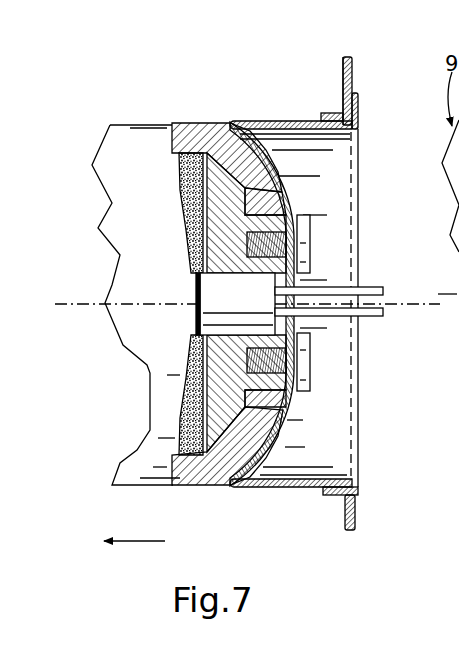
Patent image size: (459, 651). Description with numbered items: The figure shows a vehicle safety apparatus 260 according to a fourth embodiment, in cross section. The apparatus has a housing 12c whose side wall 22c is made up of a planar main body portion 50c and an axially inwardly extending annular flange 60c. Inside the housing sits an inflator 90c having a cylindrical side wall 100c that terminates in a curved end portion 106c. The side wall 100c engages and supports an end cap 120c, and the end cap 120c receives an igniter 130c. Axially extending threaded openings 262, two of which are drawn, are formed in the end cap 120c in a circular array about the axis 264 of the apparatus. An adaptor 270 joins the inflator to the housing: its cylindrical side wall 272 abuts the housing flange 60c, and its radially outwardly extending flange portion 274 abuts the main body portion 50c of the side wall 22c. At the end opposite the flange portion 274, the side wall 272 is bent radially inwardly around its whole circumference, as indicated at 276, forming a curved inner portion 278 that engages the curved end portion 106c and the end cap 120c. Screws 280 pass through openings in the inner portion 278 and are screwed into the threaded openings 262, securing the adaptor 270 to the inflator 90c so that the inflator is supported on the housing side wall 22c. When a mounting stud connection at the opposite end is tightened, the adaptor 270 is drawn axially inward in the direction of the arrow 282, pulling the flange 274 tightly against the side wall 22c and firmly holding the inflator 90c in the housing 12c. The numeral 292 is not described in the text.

The vehicle safety apparatus 260 is at (133, 62).
The inflator 90c is at (86, 162).
The cylindrical side wall 100c is at (168, 141).
The curved end portion 106c is at (184, 197).
The end cap 120c is at (228, 226).
The igniter 130c is at (225, 293).
The threaded openings 262 is at (240, 250).
The axis 264 is at (94, 308).
The radially inwardly bent portion 276 is at (233, 123).
The curved inner portion 278 is at (292, 186).
The screws 280 is at (308, 248).
The shaft 292 is at (443, 294).
The adaptor 270 is at (271, 492).
The cylindrical side wall 272 is at (304, 495).
The flange portion 274 is at (358, 498).
The planar main body portion 50c is at (350, 58).
The annular flange 60c is at (334, 112).
The side wall 22c is at (357, 71).
The housing 12c is at (339, 60).
The arrow 282 is at (160, 543).